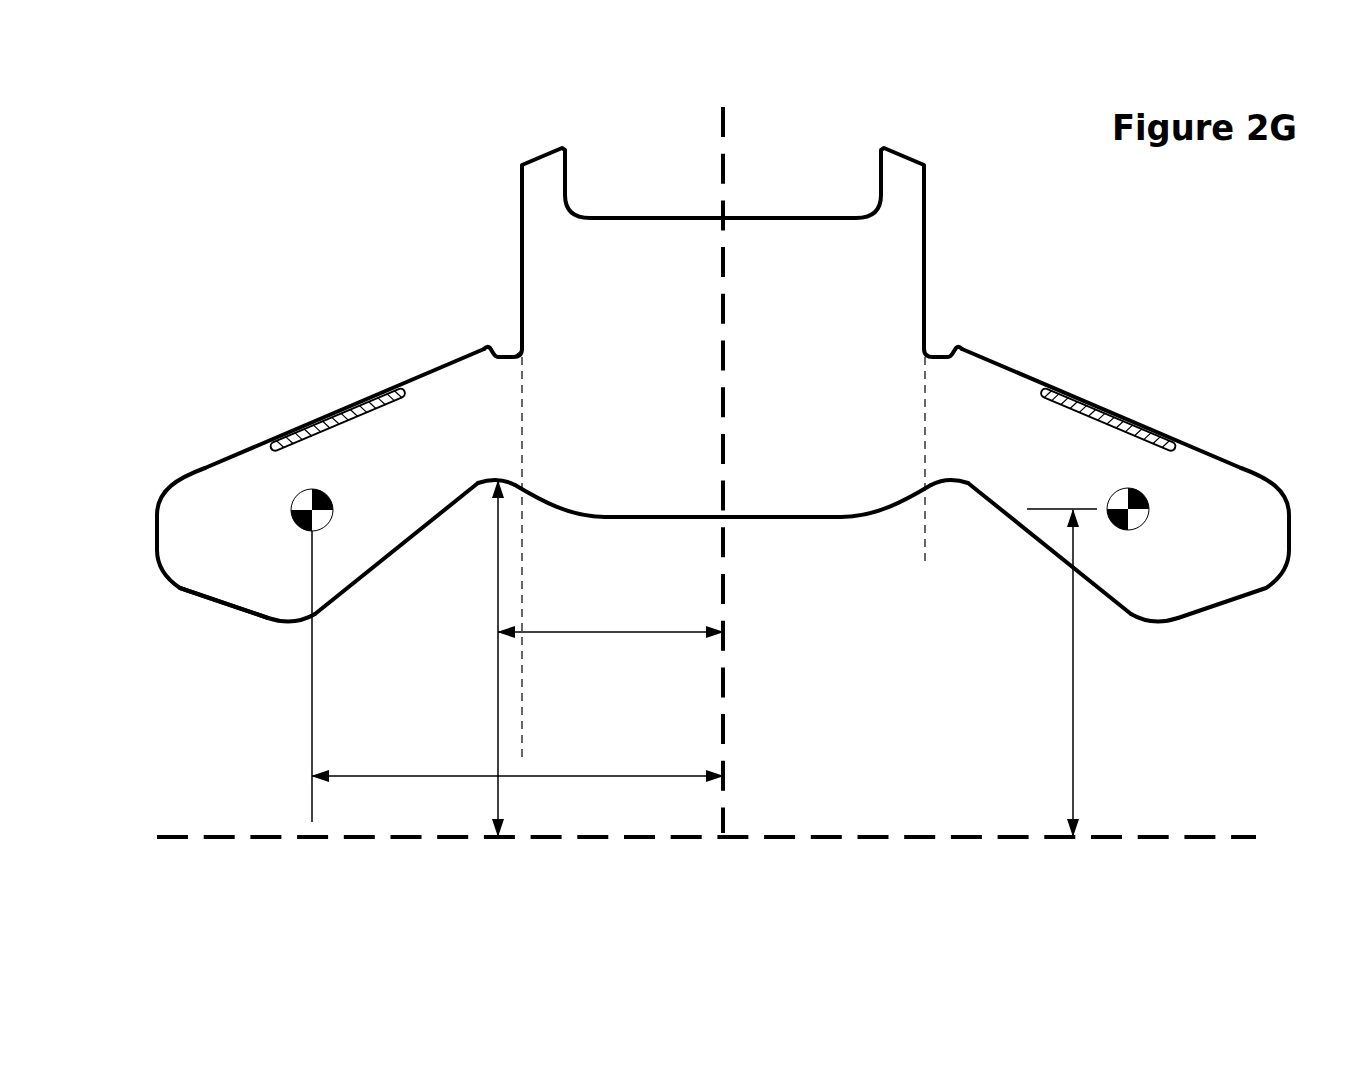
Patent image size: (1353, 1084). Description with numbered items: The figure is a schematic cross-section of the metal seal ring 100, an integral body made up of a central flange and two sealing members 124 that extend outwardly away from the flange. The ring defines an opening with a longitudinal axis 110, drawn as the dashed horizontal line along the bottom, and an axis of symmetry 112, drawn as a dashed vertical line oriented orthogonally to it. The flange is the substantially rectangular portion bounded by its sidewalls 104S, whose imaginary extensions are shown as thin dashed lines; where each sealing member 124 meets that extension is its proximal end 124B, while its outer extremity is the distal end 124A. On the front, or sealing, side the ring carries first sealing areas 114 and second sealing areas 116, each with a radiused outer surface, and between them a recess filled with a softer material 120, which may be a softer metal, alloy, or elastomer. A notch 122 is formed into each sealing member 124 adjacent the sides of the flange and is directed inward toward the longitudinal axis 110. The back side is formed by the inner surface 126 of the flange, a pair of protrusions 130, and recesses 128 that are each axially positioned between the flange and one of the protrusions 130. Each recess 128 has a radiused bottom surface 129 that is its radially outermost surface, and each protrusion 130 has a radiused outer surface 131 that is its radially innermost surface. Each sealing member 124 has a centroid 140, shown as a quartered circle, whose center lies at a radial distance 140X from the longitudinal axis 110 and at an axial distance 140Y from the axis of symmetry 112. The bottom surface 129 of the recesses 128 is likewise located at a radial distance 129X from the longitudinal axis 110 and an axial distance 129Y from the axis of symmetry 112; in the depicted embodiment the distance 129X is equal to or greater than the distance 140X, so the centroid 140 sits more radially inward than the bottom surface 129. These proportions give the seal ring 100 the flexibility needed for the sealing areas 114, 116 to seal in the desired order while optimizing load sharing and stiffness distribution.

The metal seal ring 100 is at (252, 217).
The sidewalls of the flange 104S is at (522, 272).
The longitudinal axis 110 is at (937, 837).
The axis of symmetry 112 is at (723, 192).
The first sealing areas 114 is at (1218, 452).
The second sealing areas 116 is at (420, 358).
The softer material 120 is at (1113, 415).
The notch 122 is at (478, 325).
The sealing members 124 is at (686, 480).
The distal end of the sealing member 124A is at (155, 548).
The proximal end of the sealing member 124B is at (523, 425).
The inner surface 126 is at (805, 514).
The recesses 128 is at (480, 510).
The bottom surface of the recesses 129 is at (497, 478).
The radial distance to the bottom surface 129X is at (498, 670).
The axial distance to the bottom surface 129Y is at (570, 632).
The protrusions 130 is at (208, 622).
The outer surface of the protrusions 131 is at (298, 618).
The centroid 140 is at (293, 503).
The radial distance to the centroid 140X is at (1073, 715).
The axial distance to the centroid 140Y is at (437, 775).